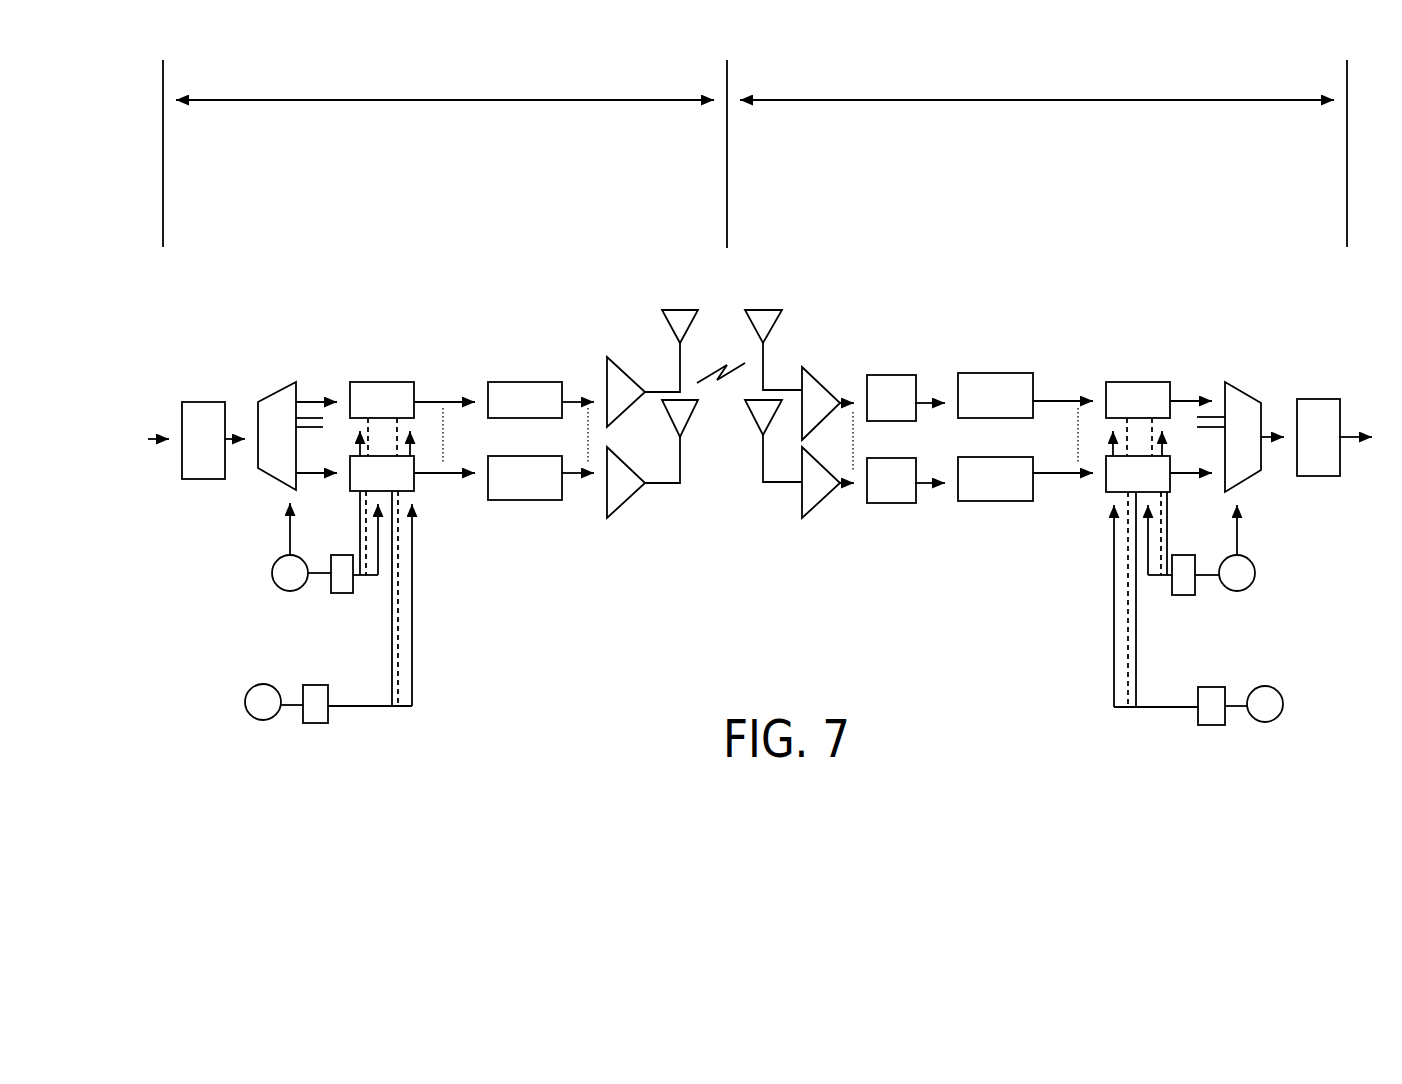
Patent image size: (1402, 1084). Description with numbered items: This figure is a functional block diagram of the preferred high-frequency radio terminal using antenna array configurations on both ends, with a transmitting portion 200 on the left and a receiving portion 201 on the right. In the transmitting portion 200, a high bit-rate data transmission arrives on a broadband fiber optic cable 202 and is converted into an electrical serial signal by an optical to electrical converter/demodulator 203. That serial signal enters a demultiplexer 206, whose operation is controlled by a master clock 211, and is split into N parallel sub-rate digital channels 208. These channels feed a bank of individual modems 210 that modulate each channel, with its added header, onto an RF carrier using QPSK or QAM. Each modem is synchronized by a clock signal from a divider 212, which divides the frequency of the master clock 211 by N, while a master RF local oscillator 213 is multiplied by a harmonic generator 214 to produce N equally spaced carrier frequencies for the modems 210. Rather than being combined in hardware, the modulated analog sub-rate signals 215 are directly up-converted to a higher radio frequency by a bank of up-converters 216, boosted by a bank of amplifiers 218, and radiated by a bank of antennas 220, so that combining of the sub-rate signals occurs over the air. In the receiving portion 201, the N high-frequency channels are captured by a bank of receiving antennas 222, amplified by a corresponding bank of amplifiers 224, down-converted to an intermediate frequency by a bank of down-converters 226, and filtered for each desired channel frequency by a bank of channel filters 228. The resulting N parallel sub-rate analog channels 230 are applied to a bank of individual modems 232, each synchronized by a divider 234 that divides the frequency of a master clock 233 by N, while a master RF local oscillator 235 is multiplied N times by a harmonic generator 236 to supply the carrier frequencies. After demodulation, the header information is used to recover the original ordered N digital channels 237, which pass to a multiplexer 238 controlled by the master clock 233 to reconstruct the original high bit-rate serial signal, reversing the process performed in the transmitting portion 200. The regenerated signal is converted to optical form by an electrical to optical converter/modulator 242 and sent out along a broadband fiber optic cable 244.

The transmitting portion 200 is at (445, 149).
The receiving portion 201 is at (1043, 148).
The broadband fiber optic cable 202 is at (186, 539).
The optical to electrical converter/demodulator 203 is at (223, 499).
The demultiplexer 206 is at (246, 389).
The parallel sub-rate digital channels 208 is at (300, 310).
The bank of individual modems 210 is at (377, 383).
The master clock 211 is at (298, 594).
The divider 212 is at (357, 583).
The master RF local oscillator 213 is at (300, 769).
The harmonic generator 214 is at (365, 673).
The modulated analog sub-rate signals 215 is at (427, 310).
The bank of up-converters 216 is at (517, 385).
The bank of amplifiers 218 is at (602, 389).
The bank of antennas 220 is at (659, 341).
The bank of receiving antennas 222 is at (794, 345).
The bank of amplifiers 224 is at (849, 394).
The bank of down-converters 226 is at (923, 385).
The bank of channel filters 228 is at (1010, 382).
The received signal lines 230 is at (1094, 313).
The bank of individual modems 232 is at (1141, 382).
The master clock 233 is at (1237, 595).
The divider 234 is at (1171, 593).
The master RF local oscillator 235 is at (1290, 766).
The harmonic generator 236 is at (1198, 673).
The demodulated signal lines 237 is at (1213, 313).
The multiplexer 238 is at (1257, 359).
The electrical to optical converter/modulator 242 is at (1343, 502).
The broadband fiber optic cable 244 is at (1321, 351).